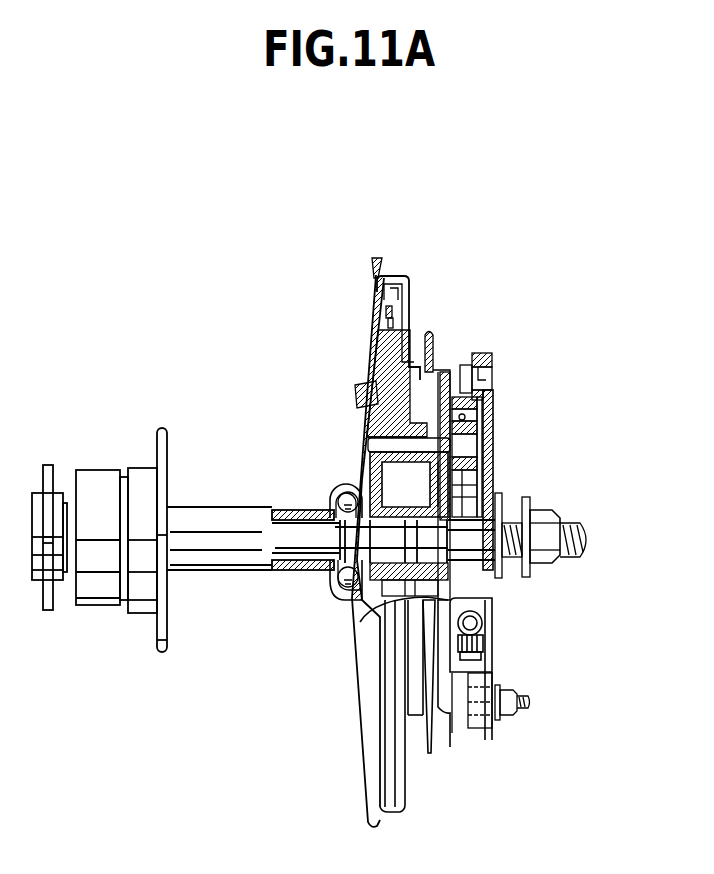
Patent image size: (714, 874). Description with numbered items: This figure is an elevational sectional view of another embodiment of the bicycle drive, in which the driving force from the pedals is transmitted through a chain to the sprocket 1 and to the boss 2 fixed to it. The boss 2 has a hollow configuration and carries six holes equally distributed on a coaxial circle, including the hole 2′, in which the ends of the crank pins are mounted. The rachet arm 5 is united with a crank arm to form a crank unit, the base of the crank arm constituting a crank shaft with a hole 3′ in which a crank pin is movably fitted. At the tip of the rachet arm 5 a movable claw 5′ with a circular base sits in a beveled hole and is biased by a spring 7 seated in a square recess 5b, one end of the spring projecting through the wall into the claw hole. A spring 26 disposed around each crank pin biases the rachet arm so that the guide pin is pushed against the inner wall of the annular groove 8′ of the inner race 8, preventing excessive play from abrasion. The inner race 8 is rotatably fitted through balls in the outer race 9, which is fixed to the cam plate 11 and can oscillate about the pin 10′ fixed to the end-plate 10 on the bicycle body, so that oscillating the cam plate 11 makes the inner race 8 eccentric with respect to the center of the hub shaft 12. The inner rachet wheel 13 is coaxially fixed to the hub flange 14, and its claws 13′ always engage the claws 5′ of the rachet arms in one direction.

The sprocket 1 is at (436, 350).
The boss 2 is at (383, 488).
The hole 2′ is at (342, 485).
The hole for a pin 3′ is at (385, 414).
The rachet arm 5 is at (375, 352).
The movable claw 5′ is at (378, 300).
The square recess 5b is at (392, 325).
The spring 7 is at (400, 330).
The inner race 8 is at (468, 445).
The annular groove 8′ is at (460, 440).
The outer race 9 is at (490, 393).
The end-plate 10 is at (493, 400).
The pin 10′ is at (492, 372).
The cam plate 11 is at (480, 355).
The hub shaft 12 is at (577, 530).
The inner rachet wheel 13 is at (408, 280).
The claws 13′ is at (396, 278).
The hub flange 14 is at (388, 318).
The spring 26 is at (356, 403).